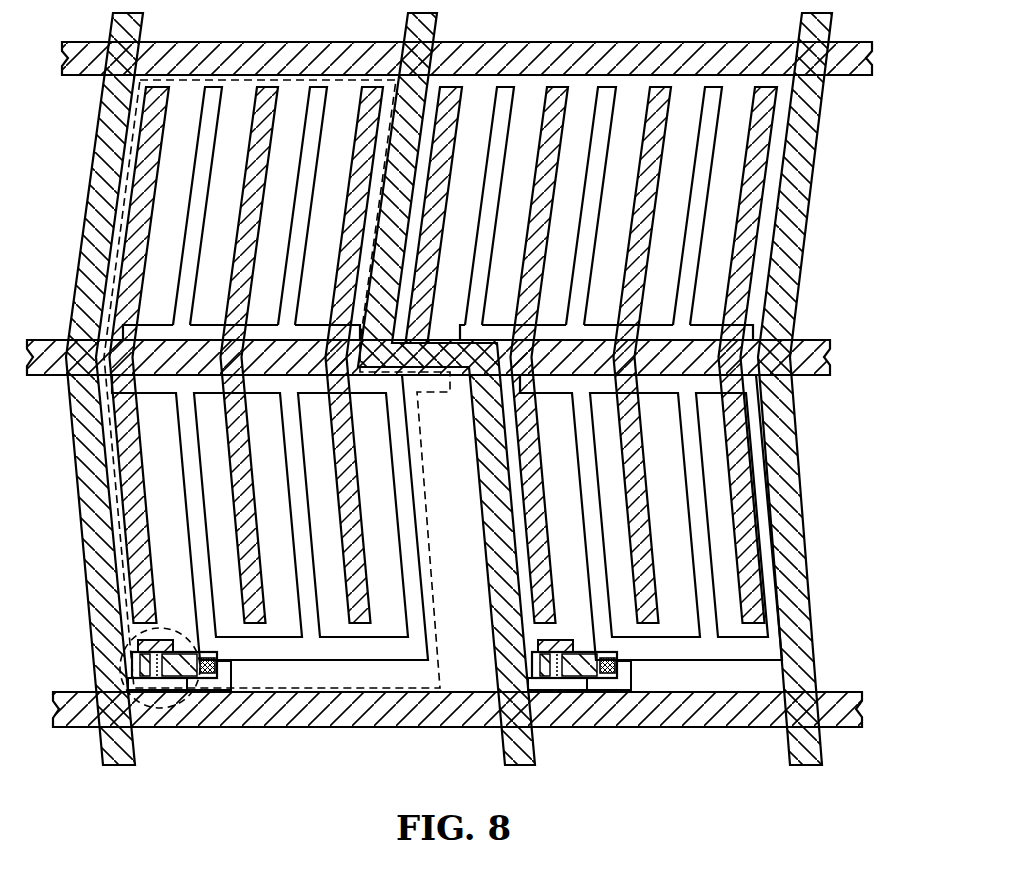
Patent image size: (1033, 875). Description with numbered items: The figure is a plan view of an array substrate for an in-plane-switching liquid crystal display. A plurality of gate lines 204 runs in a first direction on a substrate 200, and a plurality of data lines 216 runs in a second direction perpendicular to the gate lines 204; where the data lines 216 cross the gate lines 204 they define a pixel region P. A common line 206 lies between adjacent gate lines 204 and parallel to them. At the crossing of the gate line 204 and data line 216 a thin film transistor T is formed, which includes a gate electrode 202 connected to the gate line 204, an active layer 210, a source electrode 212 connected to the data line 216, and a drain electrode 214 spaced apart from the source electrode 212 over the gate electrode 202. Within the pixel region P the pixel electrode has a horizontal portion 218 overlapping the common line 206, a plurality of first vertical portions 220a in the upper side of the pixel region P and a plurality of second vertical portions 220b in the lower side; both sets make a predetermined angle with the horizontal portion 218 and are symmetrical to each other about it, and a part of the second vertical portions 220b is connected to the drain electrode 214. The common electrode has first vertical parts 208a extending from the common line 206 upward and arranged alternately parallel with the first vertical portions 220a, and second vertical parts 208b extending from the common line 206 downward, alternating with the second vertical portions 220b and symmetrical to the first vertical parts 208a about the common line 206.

The substrate 200 is at (870, 759).
The gate electrode 202 is at (166, 637).
The gate line 204 is at (320, 728).
The common line 206 is at (830, 349).
The first vertical parts 208a is at (336, 199).
The second vertical parts 208b is at (145, 511).
The active layer 210 is at (128, 767).
The source electrode 212 is at (97, 641).
The drain electrode 214 is at (190, 729).
The data line 216 is at (80, 487).
The horizontal portion 218 is at (254, 325).
The first vertical portions 220a is at (194, 278).
The second vertical portions 220b is at (196, 525).
The thin film transistor T is at (165, 730).
The pixel region P is at (797, 30).